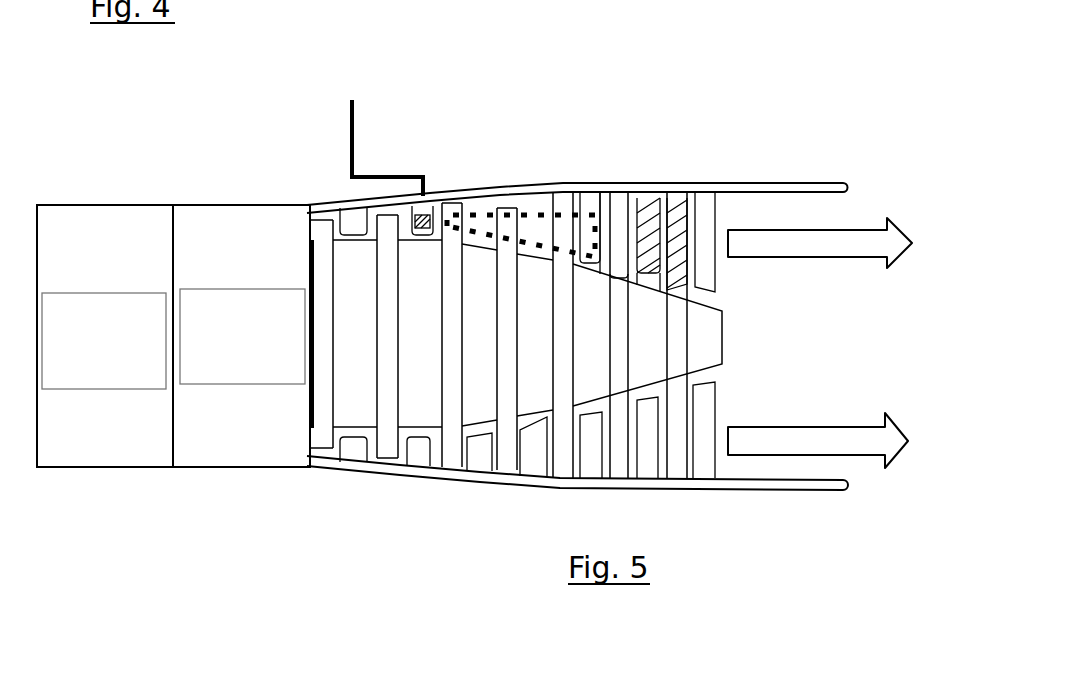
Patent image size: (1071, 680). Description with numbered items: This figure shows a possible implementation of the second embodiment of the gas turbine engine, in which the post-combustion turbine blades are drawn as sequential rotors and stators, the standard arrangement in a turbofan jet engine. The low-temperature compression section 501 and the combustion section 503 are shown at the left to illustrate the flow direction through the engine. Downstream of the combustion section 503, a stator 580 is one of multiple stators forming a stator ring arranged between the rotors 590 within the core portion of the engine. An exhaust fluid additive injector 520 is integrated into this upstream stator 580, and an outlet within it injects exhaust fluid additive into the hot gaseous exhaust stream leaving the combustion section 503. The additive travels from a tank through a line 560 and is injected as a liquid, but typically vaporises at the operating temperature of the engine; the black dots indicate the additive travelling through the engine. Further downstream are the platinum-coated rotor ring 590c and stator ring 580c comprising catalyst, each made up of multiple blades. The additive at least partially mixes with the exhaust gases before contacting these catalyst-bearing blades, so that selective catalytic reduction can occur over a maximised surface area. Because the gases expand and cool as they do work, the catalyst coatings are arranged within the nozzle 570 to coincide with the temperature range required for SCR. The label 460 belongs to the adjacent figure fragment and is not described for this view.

In FIG. 4, the component of Fig. 4 460 is at (300, 5).
In FIG. 5, the low-temperature compression section 501 is at (100, 467).
In FIG. 5, the combustion section 503 is at (218, 467).
In FIG. 5, the exhaust fluid additive injector 520 is at (424, 222).
In FIG. 5, the line 560 is at (353, 128).
In FIG. 5, the nozzle 570 is at (780, 490).
In FIG. 5, the stator 580 is at (412, 233).
In FIG. 5, the stator ring comprising catalyst 580c is at (648, 222).
In FIG. 5, the rotor 590 is at (385, 390).
In FIG. 5, the rotor ring comprising catalyst 590c is at (675, 248).